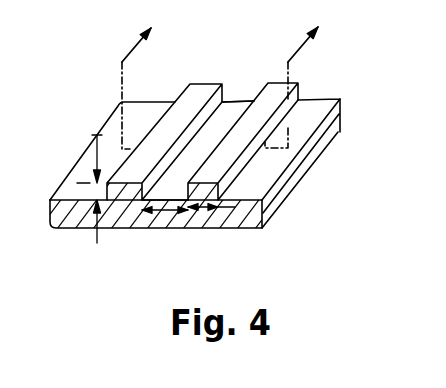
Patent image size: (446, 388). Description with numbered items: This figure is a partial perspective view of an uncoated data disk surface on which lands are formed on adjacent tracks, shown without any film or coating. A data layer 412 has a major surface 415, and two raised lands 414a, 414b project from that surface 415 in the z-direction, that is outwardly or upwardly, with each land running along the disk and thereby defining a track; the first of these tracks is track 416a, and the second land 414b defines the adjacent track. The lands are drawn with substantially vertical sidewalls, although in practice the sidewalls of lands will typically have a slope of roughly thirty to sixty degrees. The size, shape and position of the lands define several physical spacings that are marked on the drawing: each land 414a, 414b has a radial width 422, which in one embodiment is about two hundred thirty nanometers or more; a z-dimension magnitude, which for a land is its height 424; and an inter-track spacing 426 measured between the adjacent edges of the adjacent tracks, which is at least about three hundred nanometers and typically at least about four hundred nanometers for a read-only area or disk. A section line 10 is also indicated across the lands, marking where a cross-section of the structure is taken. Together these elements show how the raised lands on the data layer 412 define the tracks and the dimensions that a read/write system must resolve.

The section line 10- 10 is at (227, 86).
The data layer 412 is at (290, 192).
The land 414a is at (192, 100).
The land 414b is at (286, 78).
The surface 415 is at (258, 174).
The first track 416a is at (200, 63).
The radial width 422 is at (207, 212).
The height 424 is at (97, 143).
The inter-track spacing 426 is at (165, 212).